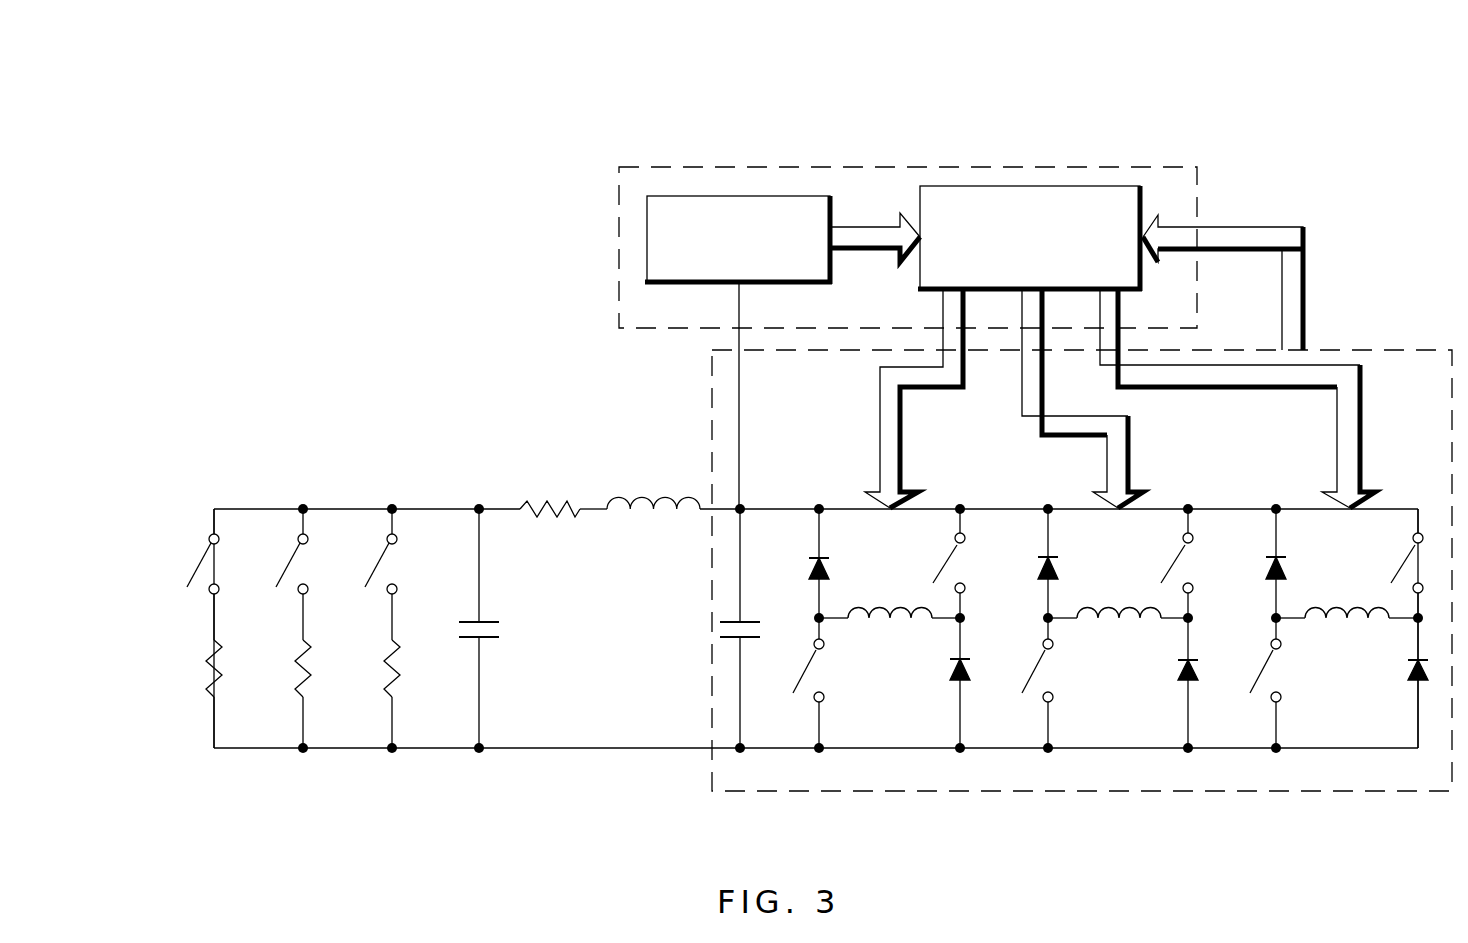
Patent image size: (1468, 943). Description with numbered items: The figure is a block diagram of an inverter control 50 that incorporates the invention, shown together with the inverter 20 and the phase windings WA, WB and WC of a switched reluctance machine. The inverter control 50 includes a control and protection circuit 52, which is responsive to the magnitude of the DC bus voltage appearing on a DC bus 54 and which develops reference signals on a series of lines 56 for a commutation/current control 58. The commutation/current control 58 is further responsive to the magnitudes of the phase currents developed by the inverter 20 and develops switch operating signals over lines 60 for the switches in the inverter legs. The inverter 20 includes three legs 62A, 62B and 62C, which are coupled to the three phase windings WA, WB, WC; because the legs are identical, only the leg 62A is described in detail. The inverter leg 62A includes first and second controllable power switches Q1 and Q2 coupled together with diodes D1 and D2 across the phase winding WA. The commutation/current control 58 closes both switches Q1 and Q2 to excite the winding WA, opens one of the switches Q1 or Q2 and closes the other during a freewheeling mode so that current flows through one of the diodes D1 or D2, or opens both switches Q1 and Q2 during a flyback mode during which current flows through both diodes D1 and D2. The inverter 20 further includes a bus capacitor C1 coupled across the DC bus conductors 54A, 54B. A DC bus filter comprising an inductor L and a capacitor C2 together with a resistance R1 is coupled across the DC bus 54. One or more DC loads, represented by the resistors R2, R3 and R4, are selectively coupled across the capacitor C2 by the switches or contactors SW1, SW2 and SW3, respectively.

The inverter 20 is at (1055, 792).
The inverter control 50 is at (767, 165).
The control and protection circuit 52 is at (646, 235).
The DC bus 54 is at (728, 782).
The DC bus conductor 54A is at (771, 508).
The DC bus conductor 54B is at (775, 749).
The lines 56 is at (858, 227).
The commutation/current control 58 is at (1062, 186).
The lines 60 is at (1192, 337).
The inverter leg 62A is at (872, 679).
The inverter leg 62B is at (1119, 679).
The inverter leg 62C is at (1345, 679).
The switch or contactor SW1 is at (380, 558).
The switch or contactor SW2 is at (290, 557).
The switch or contactor SW3 is at (198, 563).
The resistance R1 is at (541, 500).
The resistor R2 is at (387, 675).
The resistor R3 is at (297, 673).
The resistor R4 is at (208, 673).
The inductor L is at (642, 505).
The bus capacitor C1 is at (723, 640).
The capacitor C2 is at (492, 640).
The controllable power switch Q1 is at (806, 662).
The controllable power switch Q2 is at (942, 572).
The diode D1 is at (828, 560).
The diode D2 is at (947, 672).
The phase winding WA is at (900, 609).
The phase winding WB is at (1127, 608).
The phase winding WC is at (1348, 608).